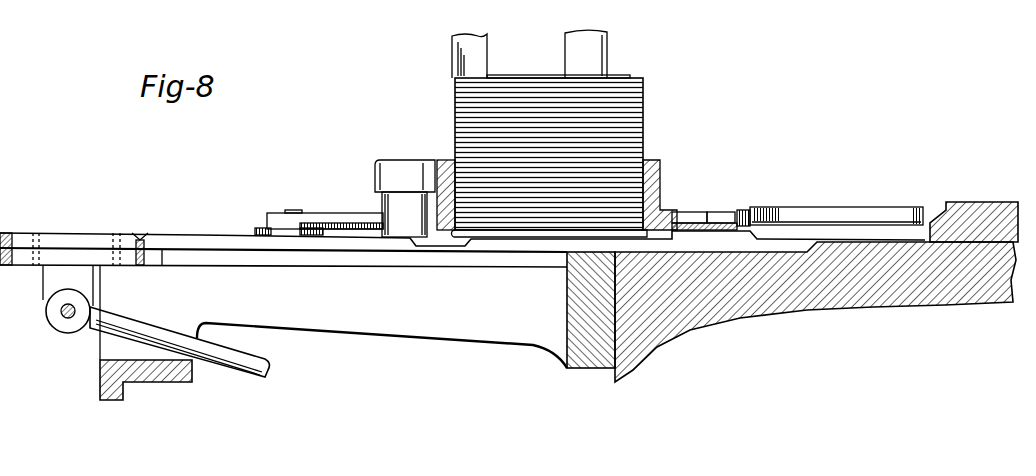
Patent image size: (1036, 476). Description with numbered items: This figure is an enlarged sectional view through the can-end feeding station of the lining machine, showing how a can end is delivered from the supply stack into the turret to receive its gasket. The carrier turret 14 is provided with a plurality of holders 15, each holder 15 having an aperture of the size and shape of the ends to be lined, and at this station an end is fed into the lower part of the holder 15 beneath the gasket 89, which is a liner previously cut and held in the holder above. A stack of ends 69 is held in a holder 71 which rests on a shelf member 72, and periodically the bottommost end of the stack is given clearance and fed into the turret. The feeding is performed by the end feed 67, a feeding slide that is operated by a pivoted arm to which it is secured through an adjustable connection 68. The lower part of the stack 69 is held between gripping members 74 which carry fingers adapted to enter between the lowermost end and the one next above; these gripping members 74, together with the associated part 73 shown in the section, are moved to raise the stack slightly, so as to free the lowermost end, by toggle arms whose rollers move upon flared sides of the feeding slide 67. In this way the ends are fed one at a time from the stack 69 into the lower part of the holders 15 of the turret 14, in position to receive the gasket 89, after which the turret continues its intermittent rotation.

The carrier turret 14 is at (685, 213).
The holder 15 is at (723, 212).
The end feed 67 is at (205, 235).
The adjustable connection 68 is at (220, 368).
The stack of ends 69 is at (540, 80).
The holder 71 is at (603, 53).
The shelf member 72 is at (367, 323).
The bolt 73 is at (423, 237).
The gripping members 74 is at (378, 215).
The gasket 89 is at (742, 210).